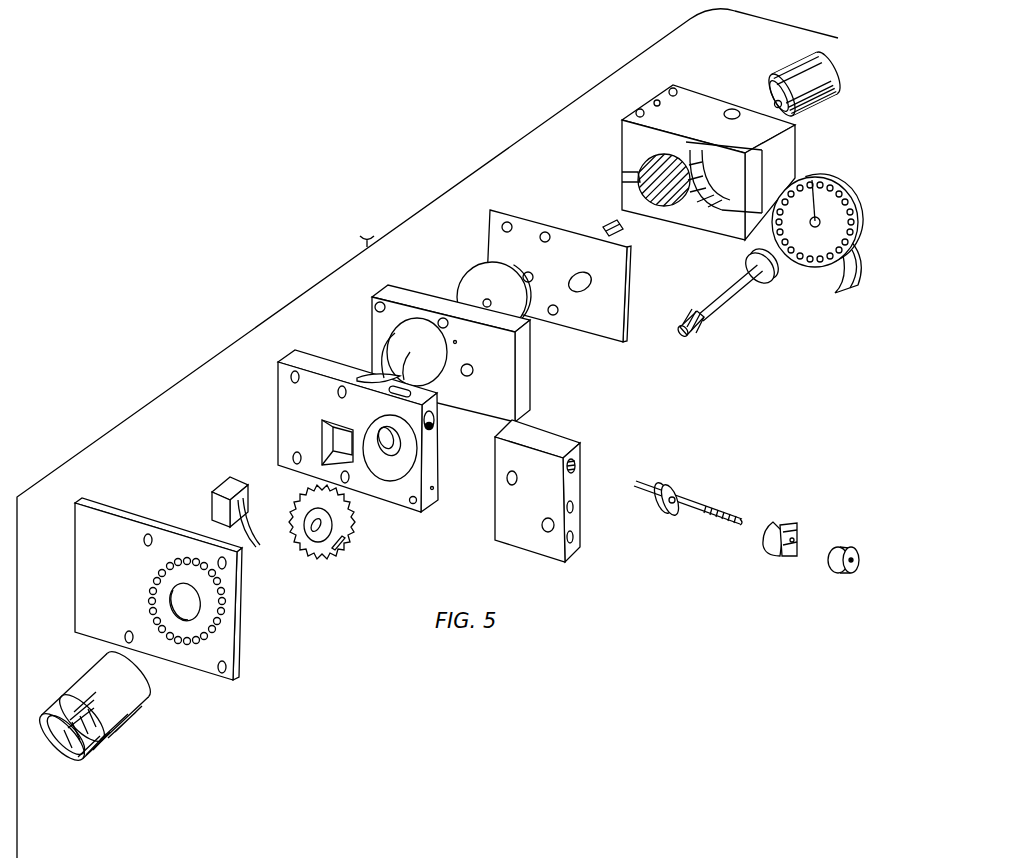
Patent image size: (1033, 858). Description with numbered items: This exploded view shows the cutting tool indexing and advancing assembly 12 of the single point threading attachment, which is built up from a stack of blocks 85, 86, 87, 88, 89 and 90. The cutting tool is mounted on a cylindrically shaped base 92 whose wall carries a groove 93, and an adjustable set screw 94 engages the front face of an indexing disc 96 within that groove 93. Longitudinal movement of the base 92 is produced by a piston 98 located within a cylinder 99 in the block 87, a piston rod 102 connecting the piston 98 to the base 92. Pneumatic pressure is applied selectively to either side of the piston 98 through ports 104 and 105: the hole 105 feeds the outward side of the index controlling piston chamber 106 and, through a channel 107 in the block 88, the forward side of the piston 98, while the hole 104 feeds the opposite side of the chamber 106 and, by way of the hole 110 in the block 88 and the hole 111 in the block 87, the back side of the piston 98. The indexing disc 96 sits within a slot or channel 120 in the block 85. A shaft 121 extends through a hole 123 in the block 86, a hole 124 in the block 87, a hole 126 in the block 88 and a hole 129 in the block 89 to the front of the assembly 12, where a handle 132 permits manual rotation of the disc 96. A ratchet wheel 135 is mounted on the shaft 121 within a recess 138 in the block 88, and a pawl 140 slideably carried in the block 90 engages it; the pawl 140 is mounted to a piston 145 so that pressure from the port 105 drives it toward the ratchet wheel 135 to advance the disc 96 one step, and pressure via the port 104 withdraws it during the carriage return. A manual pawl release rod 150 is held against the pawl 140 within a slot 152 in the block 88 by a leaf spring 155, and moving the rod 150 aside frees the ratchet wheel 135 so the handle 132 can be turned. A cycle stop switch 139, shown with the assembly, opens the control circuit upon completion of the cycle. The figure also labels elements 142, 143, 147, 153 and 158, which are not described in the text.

The cutting tool indexing and advancing assembly 12 is at (353, 222).
The block 85 is at (689, 175).
The block 86 is at (541, 266).
The block 87 is at (439, 345).
The block 88 is at (367, 436).
The block 89 is at (140, 589).
The block 90 is at (566, 482).
The base 92 is at (806, 54).
The groove 93 is at (780, 79).
The adjustable set screw 94 is at (776, 105).
The indexing disc 96 is at (858, 203).
The piston 98 is at (466, 278).
The cylinder 99 is at (389, 353).
The piston rod 102 is at (606, 225).
The port 104 is at (517, 480).
The port 105 is at (542, 524).
The index controlling piston chamber 106 is at (602, 494).
The channel 107 is at (436, 488).
The hole 110 is at (457, 438).
The hole 111 is at (457, 342).
The slot or channel 120 is at (732, 222).
The shaft 121 is at (724, 290).
The hole 123 is at (578, 291).
The hole 124 is at (467, 376).
The hole 126 is at (421, 512).
The hole 129 is at (165, 605).
The handle 132 is at (127, 720).
The ratchet wheel 135 is at (327, 534).
The groove or recess 138 is at (368, 462).
The cycle stop switch 139 is at (235, 509).
The pawl 140 is at (675, 499).
The window 142 is at (322, 430).
The leads 143 is at (270, 527).
The piston 145 is at (660, 513).
The set screw 147 is at (337, 550).
The manual pawl release rod 150 is at (394, 395).
The slot 152 is at (424, 361).
The pointer 153 is at (812, 180).
The leaf spring 155 is at (410, 350).
The threaded end 158 is at (697, 307).